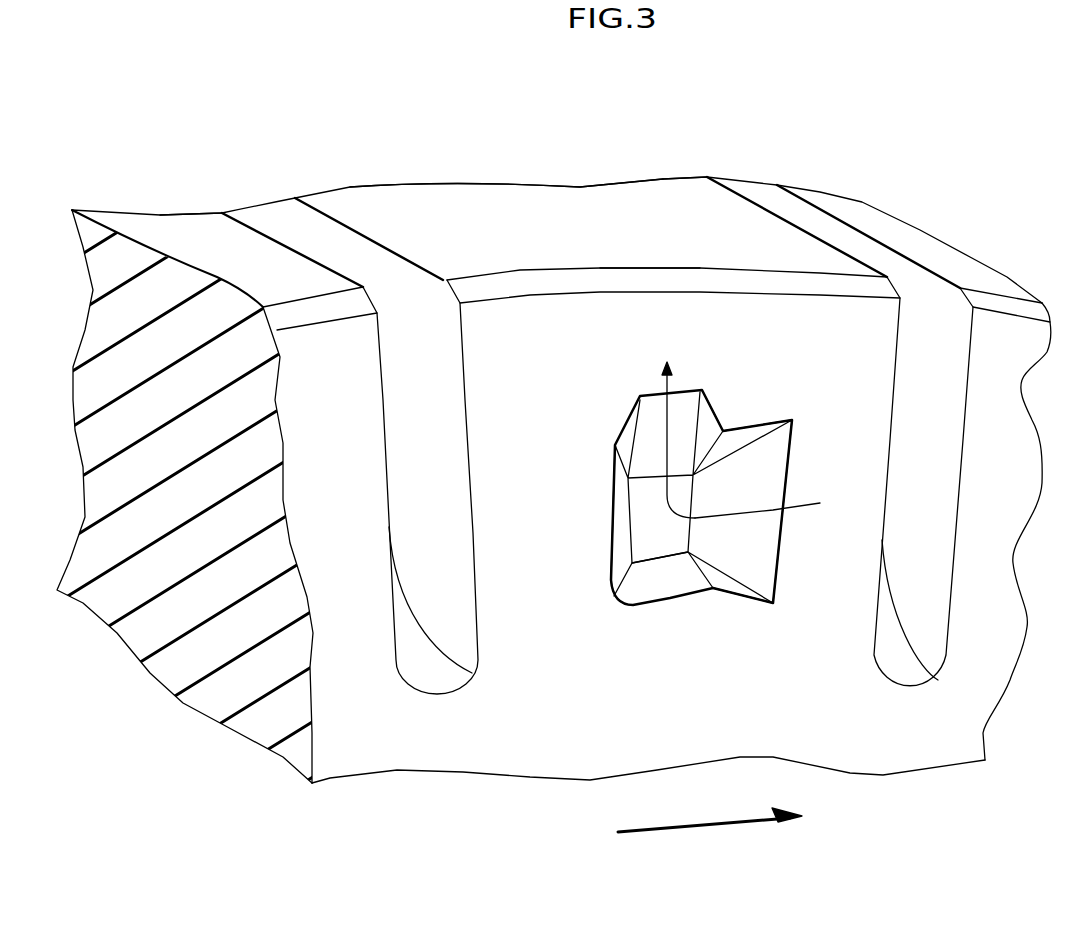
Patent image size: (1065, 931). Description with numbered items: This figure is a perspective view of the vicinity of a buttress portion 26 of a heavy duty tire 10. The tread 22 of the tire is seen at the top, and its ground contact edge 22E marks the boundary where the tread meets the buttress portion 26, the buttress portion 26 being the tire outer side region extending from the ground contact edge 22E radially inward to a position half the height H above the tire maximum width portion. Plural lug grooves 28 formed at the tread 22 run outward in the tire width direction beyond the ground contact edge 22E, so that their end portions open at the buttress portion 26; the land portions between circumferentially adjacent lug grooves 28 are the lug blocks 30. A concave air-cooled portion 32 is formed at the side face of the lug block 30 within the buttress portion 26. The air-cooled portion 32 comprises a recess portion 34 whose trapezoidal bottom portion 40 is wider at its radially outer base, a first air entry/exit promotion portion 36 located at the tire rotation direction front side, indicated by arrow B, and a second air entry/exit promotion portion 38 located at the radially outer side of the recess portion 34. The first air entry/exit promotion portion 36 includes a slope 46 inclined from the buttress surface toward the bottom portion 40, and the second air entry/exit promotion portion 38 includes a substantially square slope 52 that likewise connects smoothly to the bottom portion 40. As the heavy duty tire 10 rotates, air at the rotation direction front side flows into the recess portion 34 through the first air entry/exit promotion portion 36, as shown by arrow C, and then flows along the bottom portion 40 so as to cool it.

The heavy duty tire 10 is at (265, 155).
The tread 22 is at (555, 220).
The ground contact edge 22E is at (638, 268).
The buttress portion 26 is at (473, 735).
The lug groove 28 is at (335, 250).
The lug block 30 is at (185, 237).
The air-cooled portion 32 is at (617, 418).
The recess portion 34 is at (640, 604).
The first air entry/exit promotion portion 36 is at (740, 599).
The second air entry/exit promotion portion 38 is at (682, 390).
The bottom portion 40 is at (650, 522).
The slope 46 is at (750, 497).
The slope 52 is at (652, 408).
The tire rotation direction front side B is at (705, 827).
The air flow C is at (800, 510).